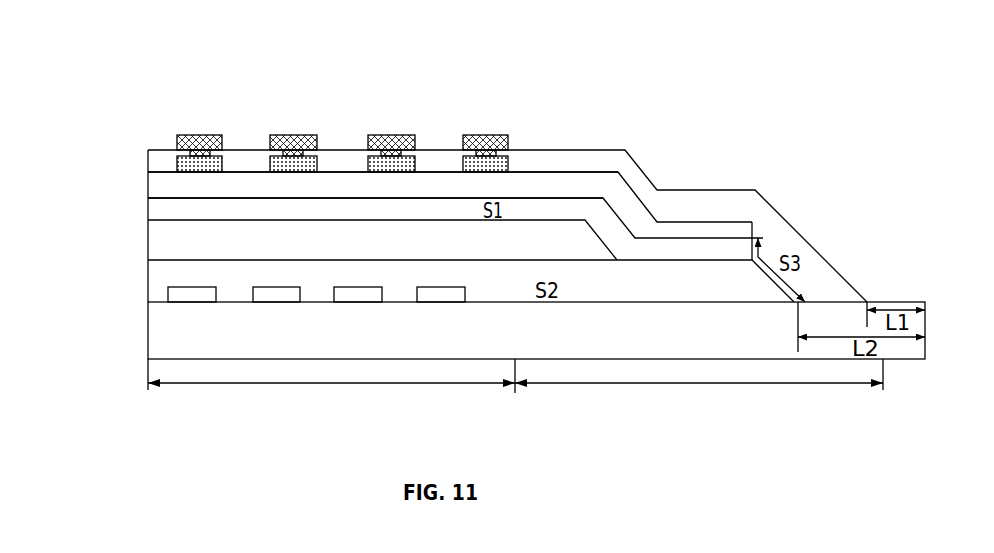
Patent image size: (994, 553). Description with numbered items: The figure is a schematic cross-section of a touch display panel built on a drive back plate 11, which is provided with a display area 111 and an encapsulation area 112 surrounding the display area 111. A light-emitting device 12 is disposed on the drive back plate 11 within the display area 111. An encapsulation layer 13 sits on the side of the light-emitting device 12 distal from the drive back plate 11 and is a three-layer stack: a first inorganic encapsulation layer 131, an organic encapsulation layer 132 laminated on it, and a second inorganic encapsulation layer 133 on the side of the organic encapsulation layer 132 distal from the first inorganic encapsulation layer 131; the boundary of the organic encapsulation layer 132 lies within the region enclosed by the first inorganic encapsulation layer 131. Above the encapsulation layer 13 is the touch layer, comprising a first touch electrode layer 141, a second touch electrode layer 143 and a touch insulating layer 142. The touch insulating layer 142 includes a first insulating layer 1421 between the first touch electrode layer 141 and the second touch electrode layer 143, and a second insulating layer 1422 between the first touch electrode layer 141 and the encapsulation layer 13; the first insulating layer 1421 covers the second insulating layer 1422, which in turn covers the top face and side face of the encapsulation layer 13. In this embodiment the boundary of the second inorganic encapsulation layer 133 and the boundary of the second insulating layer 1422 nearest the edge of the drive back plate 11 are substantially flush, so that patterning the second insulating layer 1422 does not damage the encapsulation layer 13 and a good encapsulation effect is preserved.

The drive back plate 11 is at (163, 334).
The display area 111 is at (333, 384).
The encapsulation area 112 is at (708, 384).
The light-emitting device 12 is at (163, 297).
The encapsulation layer 13 is at (407, 226).
The first inorganic encapsulation layer 131 is at (163, 275).
The organic encapsulation layer 132 is at (163, 239).
The second inorganic encapsulation layer 133 is at (163, 208).
The first touch electrode layer 141 is at (342, 121).
The touch insulating layer 142 is at (507, 155).
The first insulating layer 1421 is at (330, 157).
The second insulating layer 1422 is at (380, 67).
The second touch electrode layer 143 is at (415, 138).